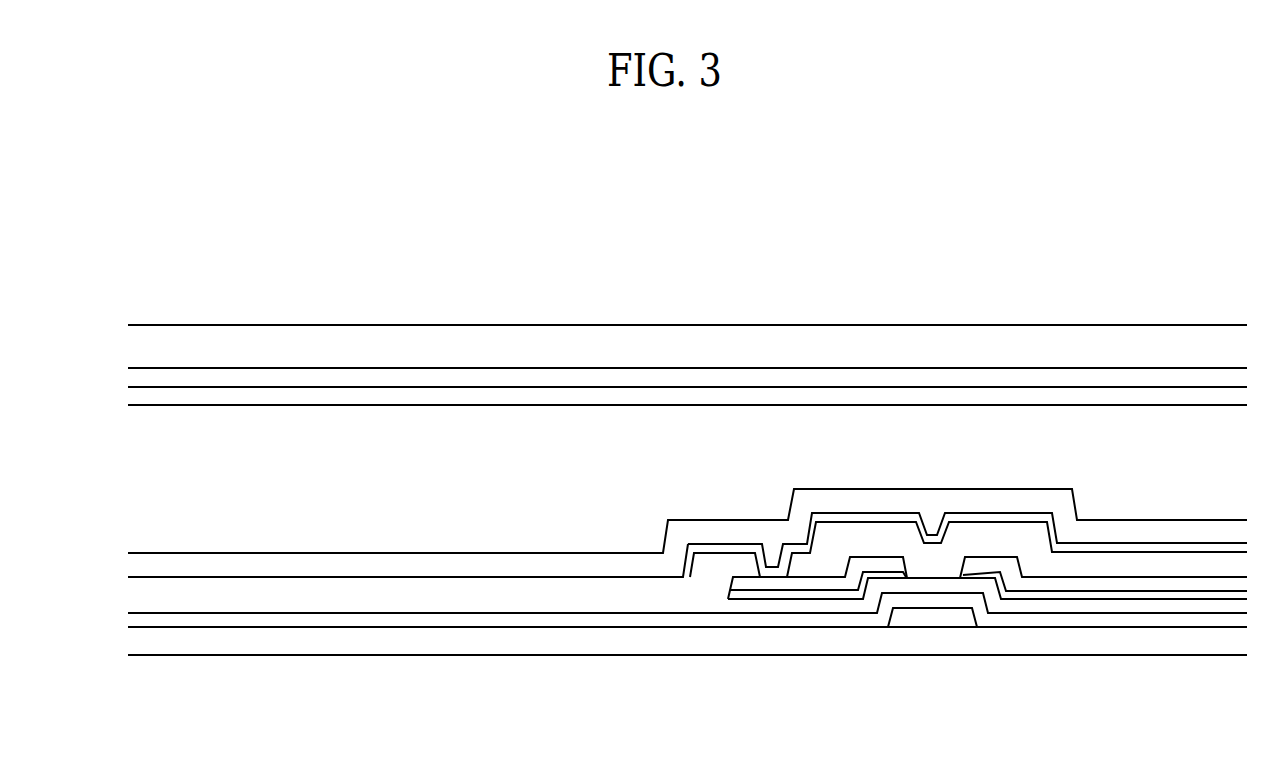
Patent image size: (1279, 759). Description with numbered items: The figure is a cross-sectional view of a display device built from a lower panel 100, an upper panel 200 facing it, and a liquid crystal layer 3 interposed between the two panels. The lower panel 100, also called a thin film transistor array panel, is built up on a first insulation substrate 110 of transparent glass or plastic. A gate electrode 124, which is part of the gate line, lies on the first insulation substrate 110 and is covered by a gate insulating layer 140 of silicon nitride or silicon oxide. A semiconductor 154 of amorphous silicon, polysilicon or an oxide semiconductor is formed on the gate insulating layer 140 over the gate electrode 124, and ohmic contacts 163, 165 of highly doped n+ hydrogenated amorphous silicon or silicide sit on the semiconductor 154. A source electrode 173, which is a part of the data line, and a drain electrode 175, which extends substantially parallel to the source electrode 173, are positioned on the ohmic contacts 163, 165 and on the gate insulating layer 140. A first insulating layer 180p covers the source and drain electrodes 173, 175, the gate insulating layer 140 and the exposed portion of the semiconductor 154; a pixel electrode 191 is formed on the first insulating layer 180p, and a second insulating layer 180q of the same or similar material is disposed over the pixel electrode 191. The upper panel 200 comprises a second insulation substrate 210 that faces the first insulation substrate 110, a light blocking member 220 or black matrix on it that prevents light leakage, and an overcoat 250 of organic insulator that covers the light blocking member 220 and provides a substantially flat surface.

The liquid crystal layer 3 is at (127, 405).
The lower panel 100 is at (127, 482).
The first insulation substrate 110 is at (853, 640).
The gate electrode 124 is at (933, 622).
The gate insulating layer 140 is at (1068, 622).
The semiconductor 154 is at (1124, 605).
The ohmic contact 163 is at (1178, 595).
The ohmic contact 165 is at (777, 597).
The source electrode 173 is at (1155, 585).
The drain electrode 175 is at (752, 583).
The first insulating layer 180p is at (1003, 538).
The second insulating layer 180q is at (895, 500).
The pixel electrode 191 is at (728, 548).
The upper panel 200 is at (127, 325).
The second insulation substrate 210 is at (316, 333).
The light blocking member 220 is at (465, 378).
The overcoat 250 is at (616, 397).